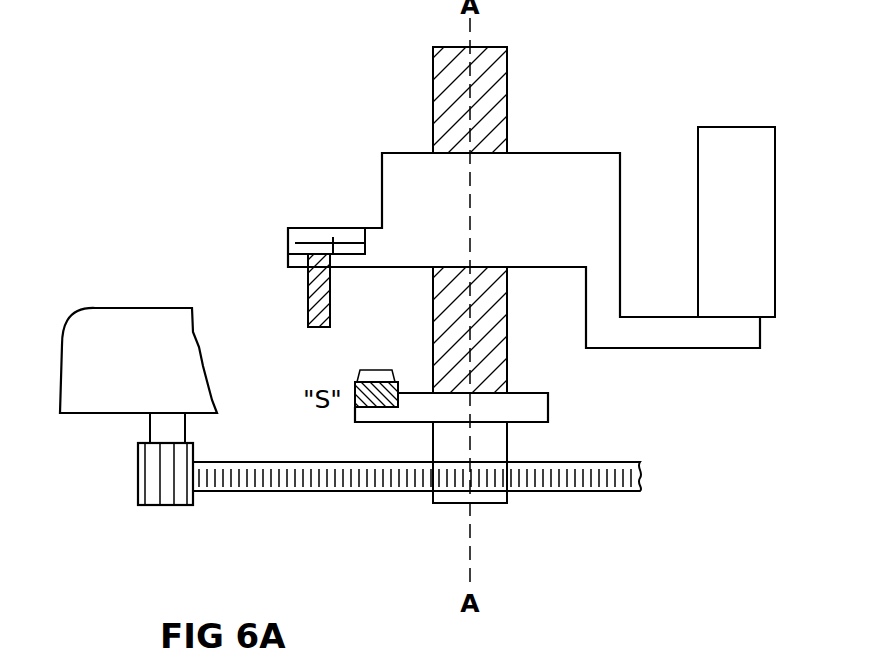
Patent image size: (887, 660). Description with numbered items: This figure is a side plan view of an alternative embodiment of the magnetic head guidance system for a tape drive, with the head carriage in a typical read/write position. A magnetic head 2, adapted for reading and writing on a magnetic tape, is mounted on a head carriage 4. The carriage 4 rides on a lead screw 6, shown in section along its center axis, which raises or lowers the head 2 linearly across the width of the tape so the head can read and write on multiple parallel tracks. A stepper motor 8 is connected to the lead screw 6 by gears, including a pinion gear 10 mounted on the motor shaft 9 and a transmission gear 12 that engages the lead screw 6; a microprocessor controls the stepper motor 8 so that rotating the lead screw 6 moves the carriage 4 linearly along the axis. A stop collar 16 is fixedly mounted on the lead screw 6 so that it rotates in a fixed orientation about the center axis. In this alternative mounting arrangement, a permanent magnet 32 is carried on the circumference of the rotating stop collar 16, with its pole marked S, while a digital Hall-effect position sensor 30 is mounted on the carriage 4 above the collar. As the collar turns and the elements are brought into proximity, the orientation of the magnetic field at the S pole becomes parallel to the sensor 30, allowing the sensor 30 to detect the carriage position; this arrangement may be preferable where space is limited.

The magnetic head 2 is at (740, 192).
The head carriage 4 is at (393, 152).
The lead screw 6 is at (507, 72).
The stepper motor 8 is at (72, 318).
The motor shaft 9 is at (150, 430).
The pinion gear 10 is at (138, 475).
The transmission gear 12 is at (288, 496).
The stop collar 16 is at (548, 405).
The digital position sensor 30 is at (308, 297).
The permanent magnet 32 is at (376, 382).